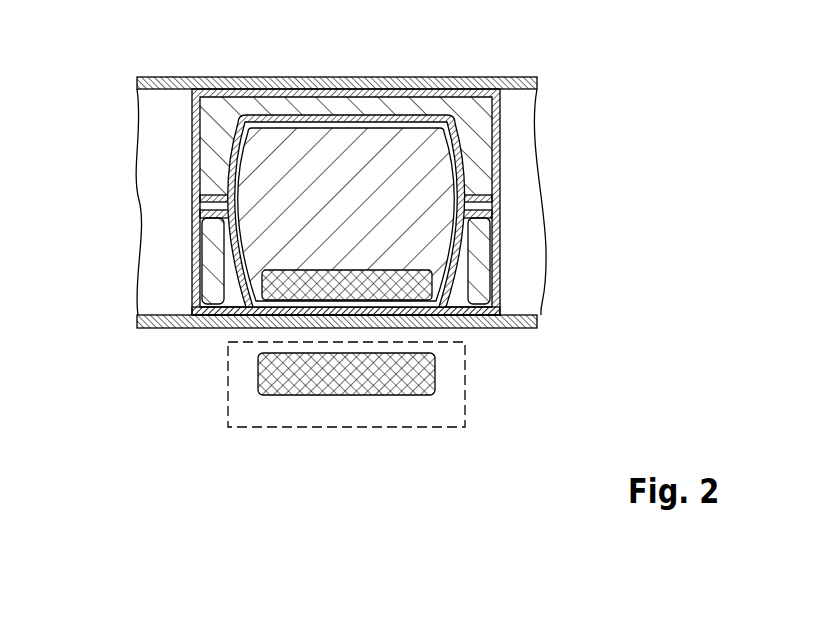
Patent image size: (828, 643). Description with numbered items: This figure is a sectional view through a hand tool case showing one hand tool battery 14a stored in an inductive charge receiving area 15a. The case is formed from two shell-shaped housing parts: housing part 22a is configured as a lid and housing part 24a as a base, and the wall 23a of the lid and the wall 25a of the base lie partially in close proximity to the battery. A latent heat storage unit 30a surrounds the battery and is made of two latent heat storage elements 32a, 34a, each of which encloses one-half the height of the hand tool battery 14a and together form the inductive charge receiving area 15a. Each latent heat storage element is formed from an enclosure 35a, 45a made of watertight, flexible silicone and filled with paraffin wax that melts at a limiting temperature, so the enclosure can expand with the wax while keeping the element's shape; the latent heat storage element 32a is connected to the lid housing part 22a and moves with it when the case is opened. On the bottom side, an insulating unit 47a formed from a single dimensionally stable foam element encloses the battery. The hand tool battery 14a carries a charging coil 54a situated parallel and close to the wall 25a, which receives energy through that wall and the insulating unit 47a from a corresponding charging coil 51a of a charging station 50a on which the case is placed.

The wall 23a is at (350, 77).
The housing part 24a is at (480, 330).
The housing part 22a is at (458, 77).
The latent heat storage element 32a is at (477, 145).
The enclosure 35a is at (498, 178).
The hand tool battery 14a is at (498, 270).
The enclosure 45a is at (193, 245).
The charging coil 54a is at (255, 313).
The inductive charge receiving area 15a is at (236, 269).
The latent heat storage element 34a is at (483, 252).
The insulating unit 47a is at (422, 315).
The wall 25a is at (272, 316).
The charging station 50a is at (358, 427).
The charging coil 51a is at (282, 387).
The latent heat storage unit 30a is at (578, 80).